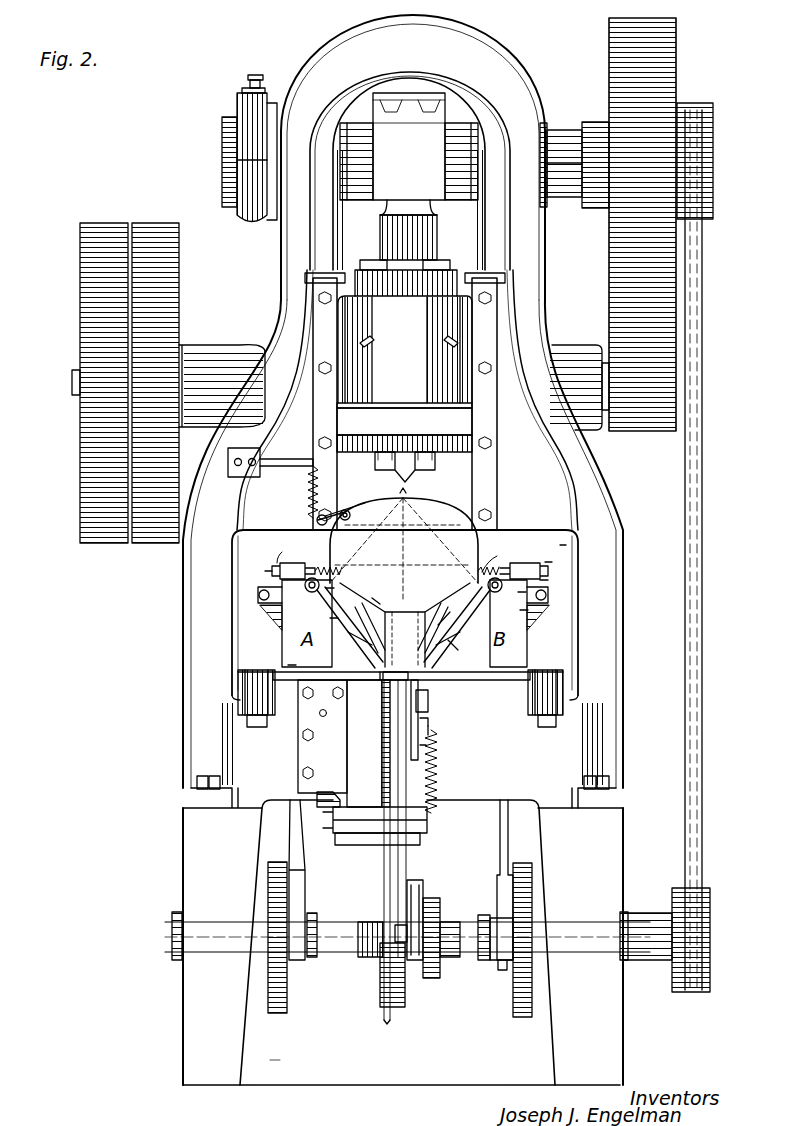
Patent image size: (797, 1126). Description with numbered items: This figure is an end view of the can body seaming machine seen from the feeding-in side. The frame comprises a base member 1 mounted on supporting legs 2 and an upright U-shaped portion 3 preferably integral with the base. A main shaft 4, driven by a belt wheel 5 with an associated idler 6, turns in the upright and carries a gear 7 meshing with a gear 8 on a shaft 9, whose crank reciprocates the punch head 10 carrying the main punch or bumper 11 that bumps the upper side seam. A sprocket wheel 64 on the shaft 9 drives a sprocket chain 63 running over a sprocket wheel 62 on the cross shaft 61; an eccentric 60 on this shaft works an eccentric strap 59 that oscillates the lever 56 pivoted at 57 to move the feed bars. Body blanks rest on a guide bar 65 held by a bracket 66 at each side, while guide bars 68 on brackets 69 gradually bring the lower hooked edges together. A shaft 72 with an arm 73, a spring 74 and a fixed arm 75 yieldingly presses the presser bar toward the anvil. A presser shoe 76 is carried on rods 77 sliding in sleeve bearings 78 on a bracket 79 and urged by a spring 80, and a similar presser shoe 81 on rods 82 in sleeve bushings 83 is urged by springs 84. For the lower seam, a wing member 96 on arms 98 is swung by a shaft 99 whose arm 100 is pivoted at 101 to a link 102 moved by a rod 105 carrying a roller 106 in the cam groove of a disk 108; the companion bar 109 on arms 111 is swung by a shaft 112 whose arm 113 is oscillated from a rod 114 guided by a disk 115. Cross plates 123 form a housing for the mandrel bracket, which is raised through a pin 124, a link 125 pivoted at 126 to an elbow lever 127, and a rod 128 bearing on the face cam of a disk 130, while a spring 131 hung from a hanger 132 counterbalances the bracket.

The base member 1 is at (570, 778).
The supporting legs 2 is at (195, 848).
The upright U-shaped portion 3 is at (493, 530).
The main shaft 4 is at (185, 380).
The belt wheel 5 is at (153, 235).
The idler 6 is at (80, 254).
The gear 7 is at (636, 430).
The gear 8 is at (672, 70).
The shaft 9 is at (560, 150).
The punch head 10 is at (405, 311).
The main punch or bumper 11 is at (413, 460).
The lever 56 is at (400, 762).
The pivot 57 is at (360, 822).
The eccentric strap 59 is at (395, 935).
The eccentric 60 is at (385, 1008).
The cross shaft 61 is at (480, 928).
The sprocket wheel 62 is at (700, 945).
The sprocket chain 63 is at (704, 628).
The sprocket wheel 64 is at (714, 120).
The guide bar 65 is at (465, 598).
The bracket 66 is at (405, 625).
The guide bar 68 is at (403, 626).
The brackets 69 is at (322, 690).
The shaft 72 is at (350, 515).
The arm 73 is at (348, 510).
The spring 74 is at (270, 471).
The fixed arm 75 is at (295, 462).
The presser shoe 76 is at (404, 544).
The rods 77 is at (265, 571).
The sleeve bearings 78 is at (277, 563).
The bracket 79 is at (288, 665).
The spring 80 is at (318, 568).
The presser shoe 81 is at (492, 555).
The rods 82 is at (552, 562).
The sleeve bushings 83 is at (566, 545).
The springs 84 is at (492, 568).
The wing member 96 is at (430, 700).
The arms 98 is at (452, 618).
The shaft 99 is at (485, 622).
The arm 100 is at (548, 583).
The pivot 101 is at (526, 595).
The link 102 is at (528, 610).
The rod 105 is at (495, 843).
The roller 106 is at (515, 882).
The disk 108 is at (532, 992).
The bar 109 is at (392, 686).
The arms 111 is at (330, 618).
The shaft 112 is at (372, 598).
The arm 113 is at (326, 588).
The rod 114 is at (290, 828).
The disk 115 is at (310, 985).
The cross plates 123 is at (424, 702).
The pin 124 is at (432, 732).
The link 125 is at (426, 752).
The pivot 126 is at (428, 806).
The elbow lever 127 is at (432, 830).
The rod 128 is at (413, 960).
The disk 130 is at (440, 912).
The spring 131 is at (462, 772).
The hanger 132 is at (432, 722).